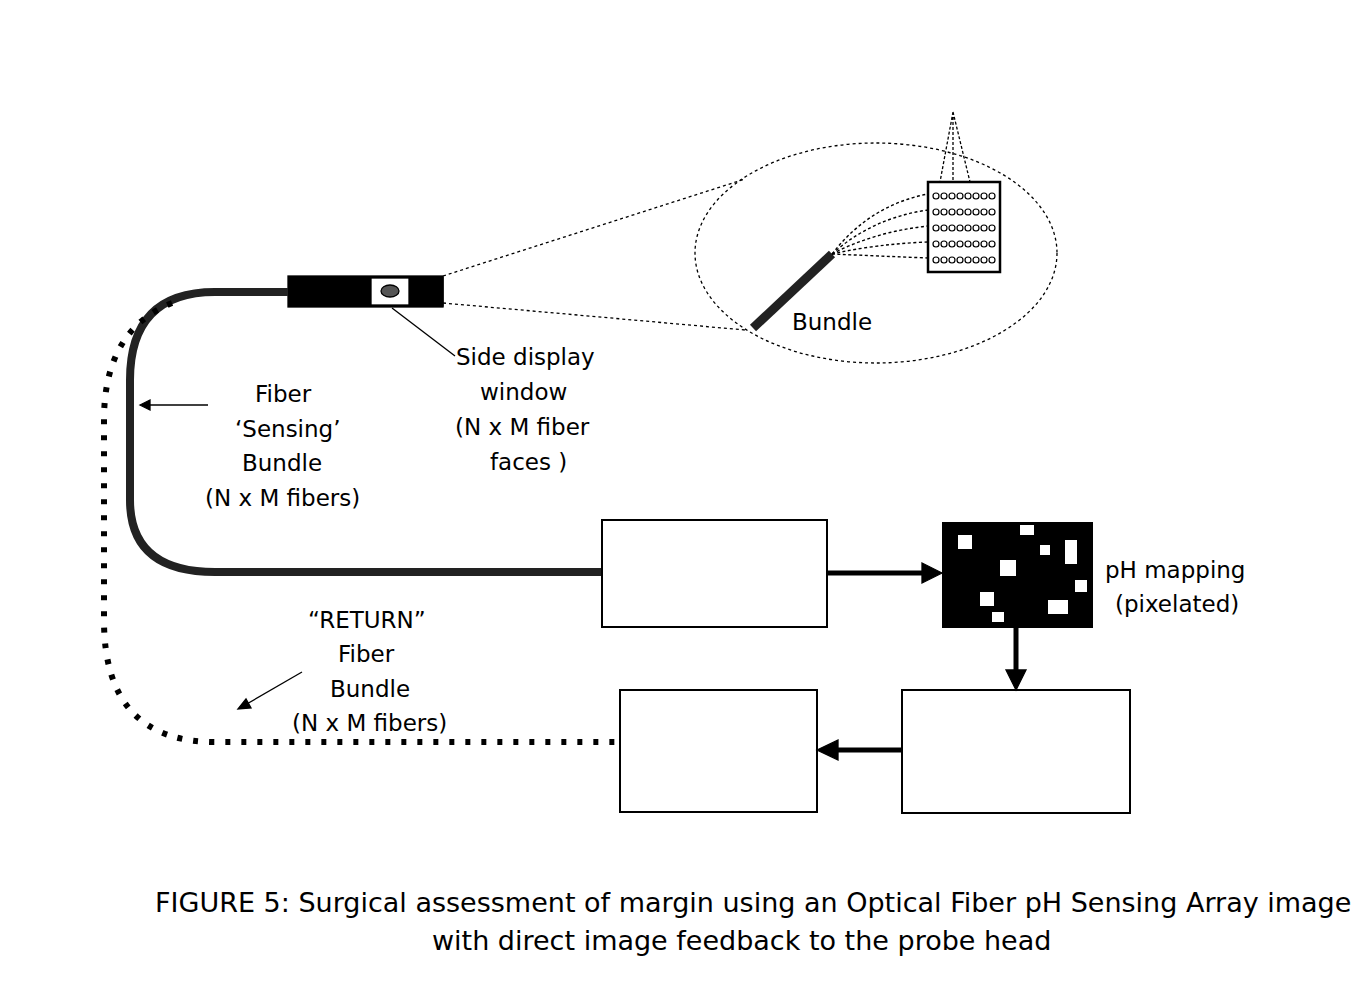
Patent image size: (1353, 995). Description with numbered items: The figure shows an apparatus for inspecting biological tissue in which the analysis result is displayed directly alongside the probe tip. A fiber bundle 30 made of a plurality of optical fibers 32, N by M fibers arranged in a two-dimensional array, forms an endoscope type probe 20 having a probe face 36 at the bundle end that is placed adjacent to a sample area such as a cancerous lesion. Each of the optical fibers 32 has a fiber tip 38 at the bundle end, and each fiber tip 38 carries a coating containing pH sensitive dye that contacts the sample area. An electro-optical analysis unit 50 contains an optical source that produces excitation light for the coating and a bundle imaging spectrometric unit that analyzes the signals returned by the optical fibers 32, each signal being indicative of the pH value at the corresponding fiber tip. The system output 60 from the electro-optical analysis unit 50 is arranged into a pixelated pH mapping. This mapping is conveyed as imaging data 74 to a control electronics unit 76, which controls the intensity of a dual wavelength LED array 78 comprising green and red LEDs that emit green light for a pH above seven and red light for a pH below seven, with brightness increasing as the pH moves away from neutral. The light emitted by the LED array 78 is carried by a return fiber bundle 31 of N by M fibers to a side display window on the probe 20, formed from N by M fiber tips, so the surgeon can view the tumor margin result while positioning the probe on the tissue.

The endoscope type probe 20 is at (272, 242).
The fiber bundle 30 is at (362, 571).
The return fiber bundle 31 is at (408, 752).
The optical fibers 32 is at (835, 250).
The probe face 36 is at (975, 276).
The fiber tips 38 is at (942, 111).
The electro-optical analysis unit 50 is at (798, 500).
The system output 60 is at (855, 572).
The imaging data 74 is at (1022, 655).
The control electronics unit 76 is at (1135, 748).
The dual wavelength LED array 78 is at (752, 814).